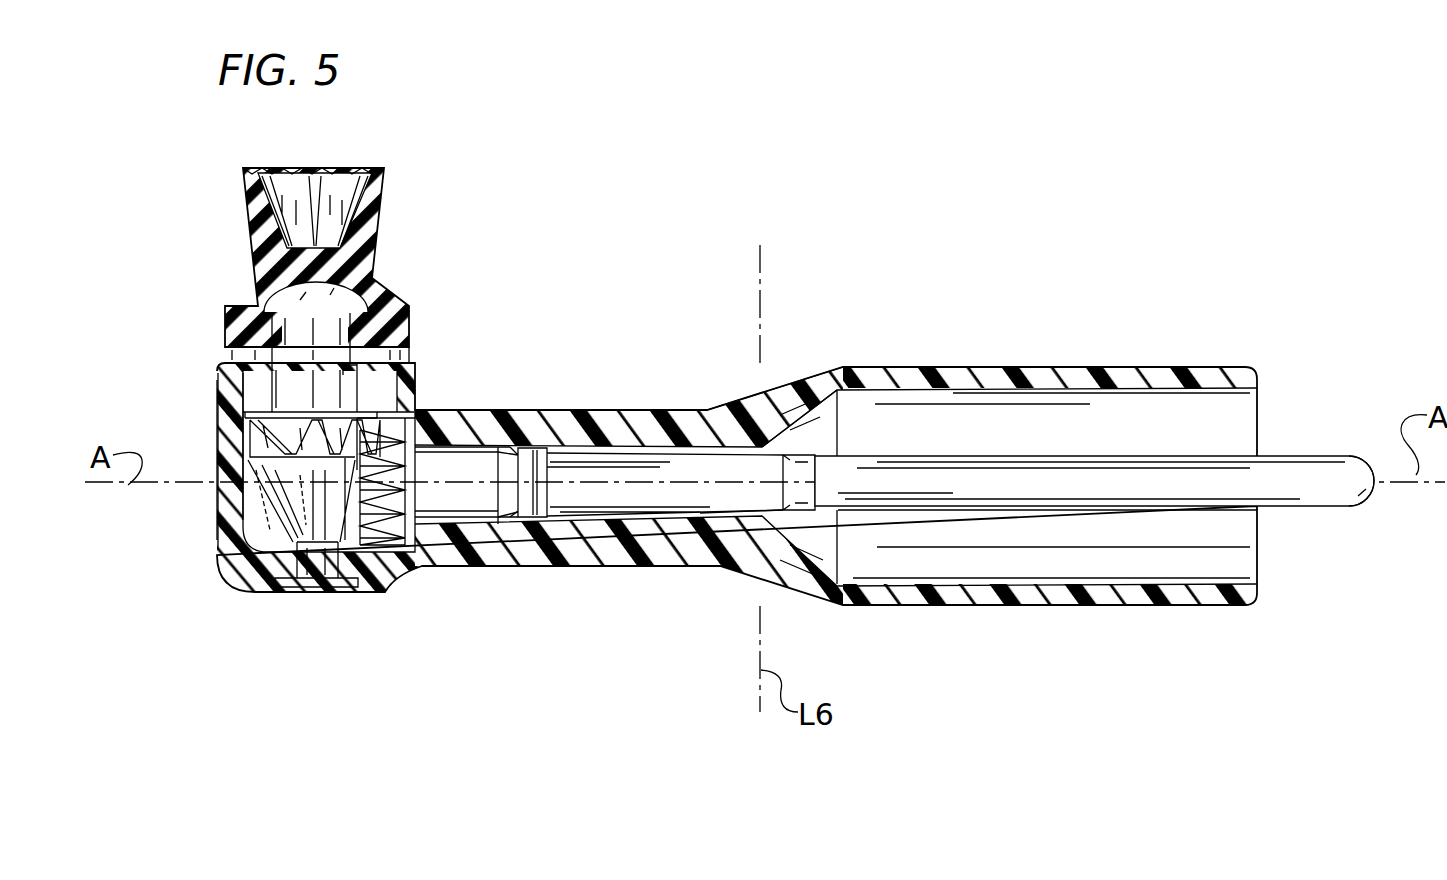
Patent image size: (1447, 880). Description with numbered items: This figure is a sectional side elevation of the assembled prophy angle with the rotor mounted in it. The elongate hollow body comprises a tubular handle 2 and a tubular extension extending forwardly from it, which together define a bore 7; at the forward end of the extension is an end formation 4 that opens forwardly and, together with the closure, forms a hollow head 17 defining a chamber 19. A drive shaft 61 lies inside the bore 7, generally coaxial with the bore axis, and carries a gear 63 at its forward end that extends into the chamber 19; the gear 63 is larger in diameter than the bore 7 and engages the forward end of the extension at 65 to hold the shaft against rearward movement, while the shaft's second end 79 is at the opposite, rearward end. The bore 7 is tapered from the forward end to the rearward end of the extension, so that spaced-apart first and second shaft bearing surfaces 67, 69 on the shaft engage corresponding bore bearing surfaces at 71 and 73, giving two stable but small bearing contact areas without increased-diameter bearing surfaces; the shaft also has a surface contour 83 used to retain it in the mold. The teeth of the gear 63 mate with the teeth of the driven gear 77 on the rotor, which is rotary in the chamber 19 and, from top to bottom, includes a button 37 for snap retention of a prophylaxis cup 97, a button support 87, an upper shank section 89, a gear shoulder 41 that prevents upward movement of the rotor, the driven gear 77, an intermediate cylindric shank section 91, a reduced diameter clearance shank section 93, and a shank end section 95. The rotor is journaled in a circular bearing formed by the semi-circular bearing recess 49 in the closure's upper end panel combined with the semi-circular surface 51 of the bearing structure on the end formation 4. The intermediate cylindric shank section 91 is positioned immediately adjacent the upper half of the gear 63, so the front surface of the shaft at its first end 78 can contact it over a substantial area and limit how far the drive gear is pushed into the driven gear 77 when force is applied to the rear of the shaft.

The tubular handle 2 is at (1100, 367).
The end formation 4 is at (425, 590).
The bore 7 is at (600, 535).
The hollow head 17 is at (205, 564).
The chamber 19 is at (267, 500).
The button 37 is at (332, 303).
The gear shoulder 41 is at (262, 394).
The bearing recess 49 is at (363, 393).
The semi-circular surface 51 is at (380, 358).
The drive shaft 61 is at (928, 477).
The gear 63 is at (410, 520).
The engagement location 65 is at (440, 570).
The first shaft bearing surface 67 is at (505, 445).
The second shaft bearing surface 69 is at (747, 480).
The bore bearing surface 71 is at (476, 470).
The bore bearing surface 73 is at (737, 429).
The driven gear 77 is at (265, 441).
The first end 78 is at (356, 530).
The second end 79 is at (1358, 510).
The surface contour 83 is at (552, 472).
The button support 87 is at (302, 332).
The upper shank section 89 is at (313, 402).
The intermediate cylindric shank section 91 is at (323, 587).
The reduced diameter clearance shank section 93 is at (293, 535).
The shank end section 95 is at (292, 563).
The prophylaxis cup 97 is at (383, 222).